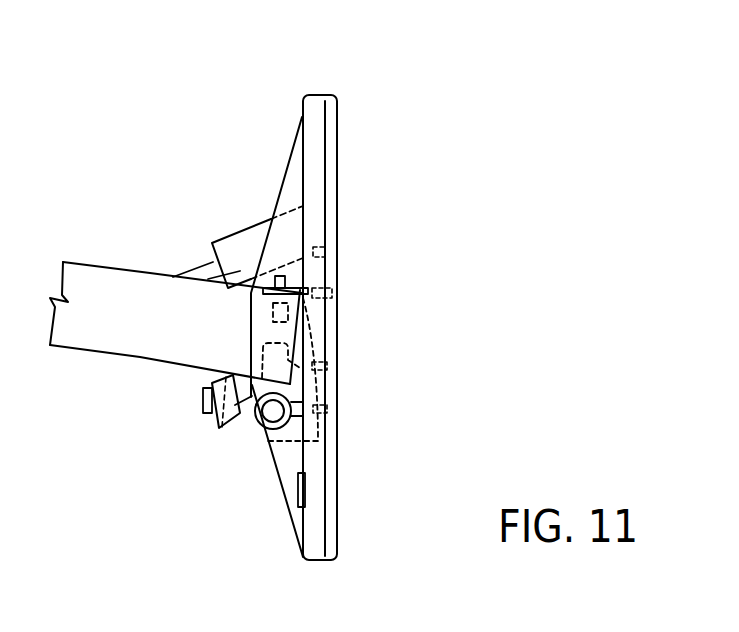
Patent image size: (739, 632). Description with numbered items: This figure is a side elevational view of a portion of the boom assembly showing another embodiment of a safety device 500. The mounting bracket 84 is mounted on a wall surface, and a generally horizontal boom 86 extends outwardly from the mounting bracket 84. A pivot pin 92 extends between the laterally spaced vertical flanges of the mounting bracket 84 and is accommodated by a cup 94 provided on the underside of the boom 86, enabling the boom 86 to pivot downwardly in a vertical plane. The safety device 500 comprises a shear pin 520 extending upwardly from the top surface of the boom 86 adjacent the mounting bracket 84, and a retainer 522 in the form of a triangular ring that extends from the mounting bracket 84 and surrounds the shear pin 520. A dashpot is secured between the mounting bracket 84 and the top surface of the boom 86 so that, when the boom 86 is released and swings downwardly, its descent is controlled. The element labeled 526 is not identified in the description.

The safety device 500 is at (206, 141).
The mounting bracket 84 is at (315, 165).
The boom 86 is at (101, 262).
The mounting block 526 is at (237, 252).
The retainer 522 is at (303, 283).
The shear pin 520 is at (289, 313).
The pivot pin 92 is at (273, 413).
The cup 94 is at (223, 428).